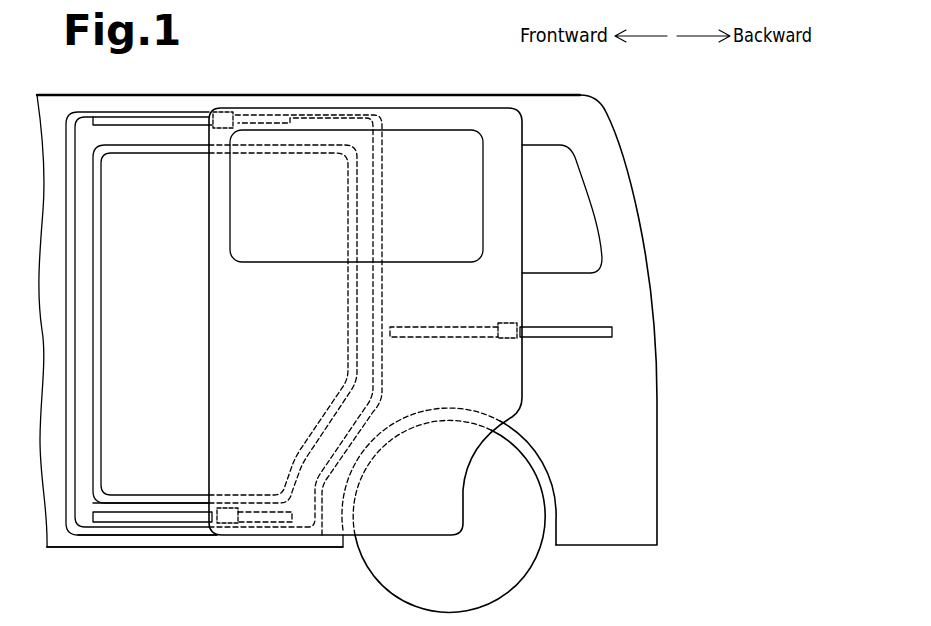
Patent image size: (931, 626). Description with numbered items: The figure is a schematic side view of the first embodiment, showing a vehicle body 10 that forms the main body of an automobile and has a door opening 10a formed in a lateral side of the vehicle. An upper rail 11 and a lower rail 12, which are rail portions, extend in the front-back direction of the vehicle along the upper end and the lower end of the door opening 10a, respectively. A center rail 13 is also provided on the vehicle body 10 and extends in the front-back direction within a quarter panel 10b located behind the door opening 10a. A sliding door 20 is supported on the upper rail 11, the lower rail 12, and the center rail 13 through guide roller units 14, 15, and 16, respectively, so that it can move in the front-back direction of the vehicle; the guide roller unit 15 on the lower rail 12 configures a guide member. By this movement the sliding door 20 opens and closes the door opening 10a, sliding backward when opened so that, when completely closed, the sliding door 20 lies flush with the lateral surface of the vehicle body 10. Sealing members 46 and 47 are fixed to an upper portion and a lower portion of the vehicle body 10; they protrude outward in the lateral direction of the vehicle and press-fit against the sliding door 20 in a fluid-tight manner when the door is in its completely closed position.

The vehicle body 10 is at (505, 102).
The door opening 10a is at (101, 331).
The quarter panel 10b is at (566, 282).
The upper rail 11 is at (175, 122).
The lower rail 12 is at (183, 513).
The center rail 13 is at (588, 326).
The guide roller unit 14 is at (221, 113).
The guide roller unit 15 is at (225, 507).
The guide roller unit 16 is at (505, 322).
The sliding door 20 is at (414, 106).
The sealing member 46 is at (142, 501).
The sealing member 47 is at (133, 537).